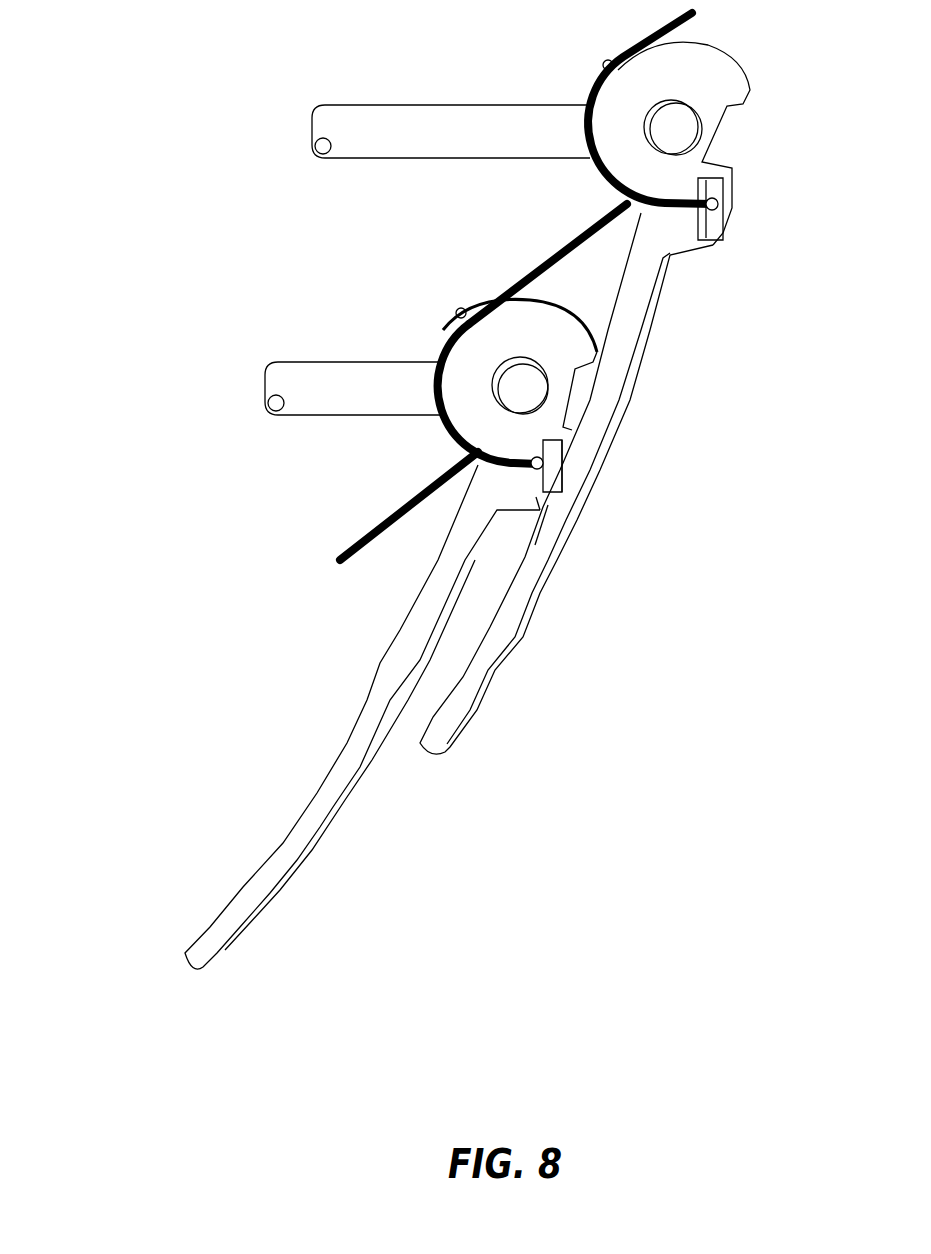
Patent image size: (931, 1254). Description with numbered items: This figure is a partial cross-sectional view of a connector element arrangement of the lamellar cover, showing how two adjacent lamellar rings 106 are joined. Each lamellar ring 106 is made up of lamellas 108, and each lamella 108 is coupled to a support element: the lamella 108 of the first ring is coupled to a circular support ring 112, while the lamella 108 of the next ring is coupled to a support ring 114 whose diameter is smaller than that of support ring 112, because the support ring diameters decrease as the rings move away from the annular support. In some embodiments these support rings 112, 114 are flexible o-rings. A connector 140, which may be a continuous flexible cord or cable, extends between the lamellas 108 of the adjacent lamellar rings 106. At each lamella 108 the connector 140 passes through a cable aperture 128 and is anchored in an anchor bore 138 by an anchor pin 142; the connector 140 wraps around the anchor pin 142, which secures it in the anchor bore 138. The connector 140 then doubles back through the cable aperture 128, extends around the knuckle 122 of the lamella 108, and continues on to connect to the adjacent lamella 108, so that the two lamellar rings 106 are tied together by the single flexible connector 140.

The lamellar ring 106 is at (160, 92).
The lamella 108 is at (642, 407).
The support element 112 is at (370, 115).
The support ring 114 is at (318, 362).
The knuckle 122 is at (693, 83).
The cable aperture 128 is at (500, 467).
The anchor bore 138 is at (557, 492).
The connector 140 is at (553, 260).
The anchor pin 142 is at (730, 193).